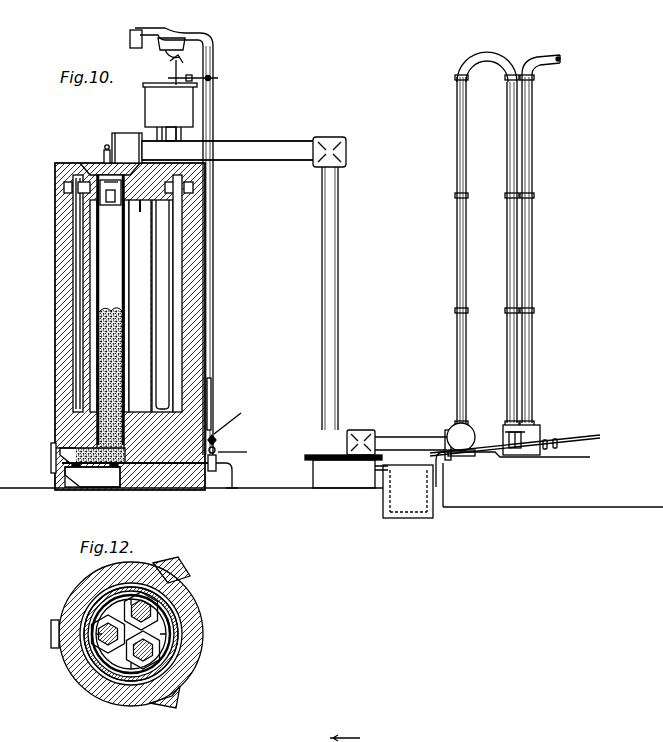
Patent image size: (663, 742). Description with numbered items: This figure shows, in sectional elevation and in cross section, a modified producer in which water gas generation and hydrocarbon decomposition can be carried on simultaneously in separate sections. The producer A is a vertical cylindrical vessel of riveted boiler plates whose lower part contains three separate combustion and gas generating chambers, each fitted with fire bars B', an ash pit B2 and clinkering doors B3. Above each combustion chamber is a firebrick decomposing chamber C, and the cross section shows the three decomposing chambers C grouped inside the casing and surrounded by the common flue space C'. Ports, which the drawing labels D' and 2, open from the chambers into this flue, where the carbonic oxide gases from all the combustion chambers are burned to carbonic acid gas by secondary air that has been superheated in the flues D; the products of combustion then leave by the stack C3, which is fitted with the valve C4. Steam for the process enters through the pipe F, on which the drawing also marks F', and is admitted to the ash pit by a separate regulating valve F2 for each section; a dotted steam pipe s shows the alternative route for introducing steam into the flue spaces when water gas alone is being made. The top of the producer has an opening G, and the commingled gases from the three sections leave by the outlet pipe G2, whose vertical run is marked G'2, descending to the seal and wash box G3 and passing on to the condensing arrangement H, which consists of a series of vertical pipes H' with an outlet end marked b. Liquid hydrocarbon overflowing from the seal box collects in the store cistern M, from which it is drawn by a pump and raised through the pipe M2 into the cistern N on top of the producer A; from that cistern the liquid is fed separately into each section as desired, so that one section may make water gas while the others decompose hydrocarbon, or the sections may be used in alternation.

In FIG. 10, the producer A is at (56, 333).
In FIG. 12, the producer A is at (196, 646).
In FIG. 10, the fire bars B' is at (137, 466).
In FIG. 10, the ash pit B2 is at (92, 477).
In FIG. 10, the clinkering doors B3 is at (52, 456).
In FIG. 10, the decomposing chamber C is at (110, 317).
In FIG. 12, the decomposing chamber C is at (122, 652).
In FIG. 12, the flue space C' is at (158, 629).
In FIG. 10, the stack C3 is at (168, 72).
In FIG. 10, the valve C4 is at (177, 33).
In FIG. 10, the flue D is at (110, 192).
In FIG. 12, the flue D is at (106, 619).
In FIG. 10, the tube D' is at (138, 306).
In FIG. 10, the cap plate 2 is at (111, 179).
In FIG. 10, the steam pipe F is at (225, 267).
In FIG. 10, the gauge F' is at (221, 403).
In FIG. 10, the regulating valve F2 is at (215, 442).
In FIG. 10, the steam pipe s is at (229, 418).
In FIG. 10, the opening G is at (123, 148).
In FIG. 10, the gas outlet pipe G2 is at (244, 152).
In FIG. 10, the vertical gas pipe G'2 is at (330, 298).
In FIG. 10, the seal and wash box G3 is at (378, 459).
In FIG. 10, the condensing arrangement H is at (482, 254).
In FIG. 10, the vertical pipes H' is at (515, 255).
In FIG. 10, the outlet b is at (556, 52).
In FIG. 10, the store cistern M is at (523, 485).
In FIG. 10, the pipe M2 is at (336, 735).
In FIG. 10, the cistern N is at (170, 112).